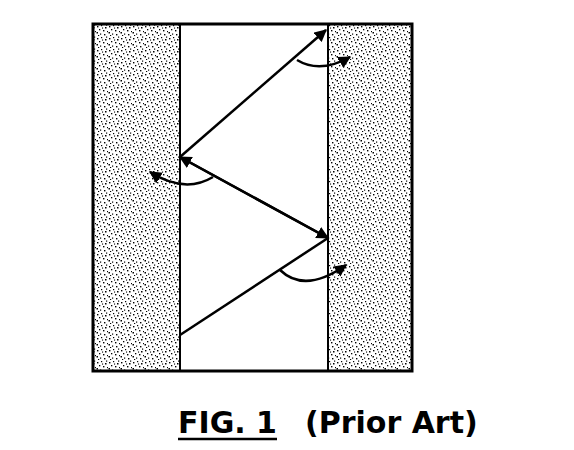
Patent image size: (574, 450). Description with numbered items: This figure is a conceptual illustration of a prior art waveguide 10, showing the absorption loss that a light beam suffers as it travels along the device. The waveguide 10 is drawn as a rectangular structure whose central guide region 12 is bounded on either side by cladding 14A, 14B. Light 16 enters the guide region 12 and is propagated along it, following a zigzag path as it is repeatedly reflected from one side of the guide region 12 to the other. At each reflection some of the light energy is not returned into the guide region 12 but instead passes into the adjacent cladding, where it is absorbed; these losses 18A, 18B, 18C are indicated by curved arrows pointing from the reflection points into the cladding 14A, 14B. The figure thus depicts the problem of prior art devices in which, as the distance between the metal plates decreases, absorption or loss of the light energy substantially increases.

The waveguide 10 is at (433, 322).
The guide region 12 is at (308, 180).
The cladding 14A is at (398, 98).
The cladding 14B is at (113, 309).
The light 16 is at (215, 106).
The loss 18A is at (330, 287).
The loss 18B is at (165, 184).
The loss 18C is at (330, 76).